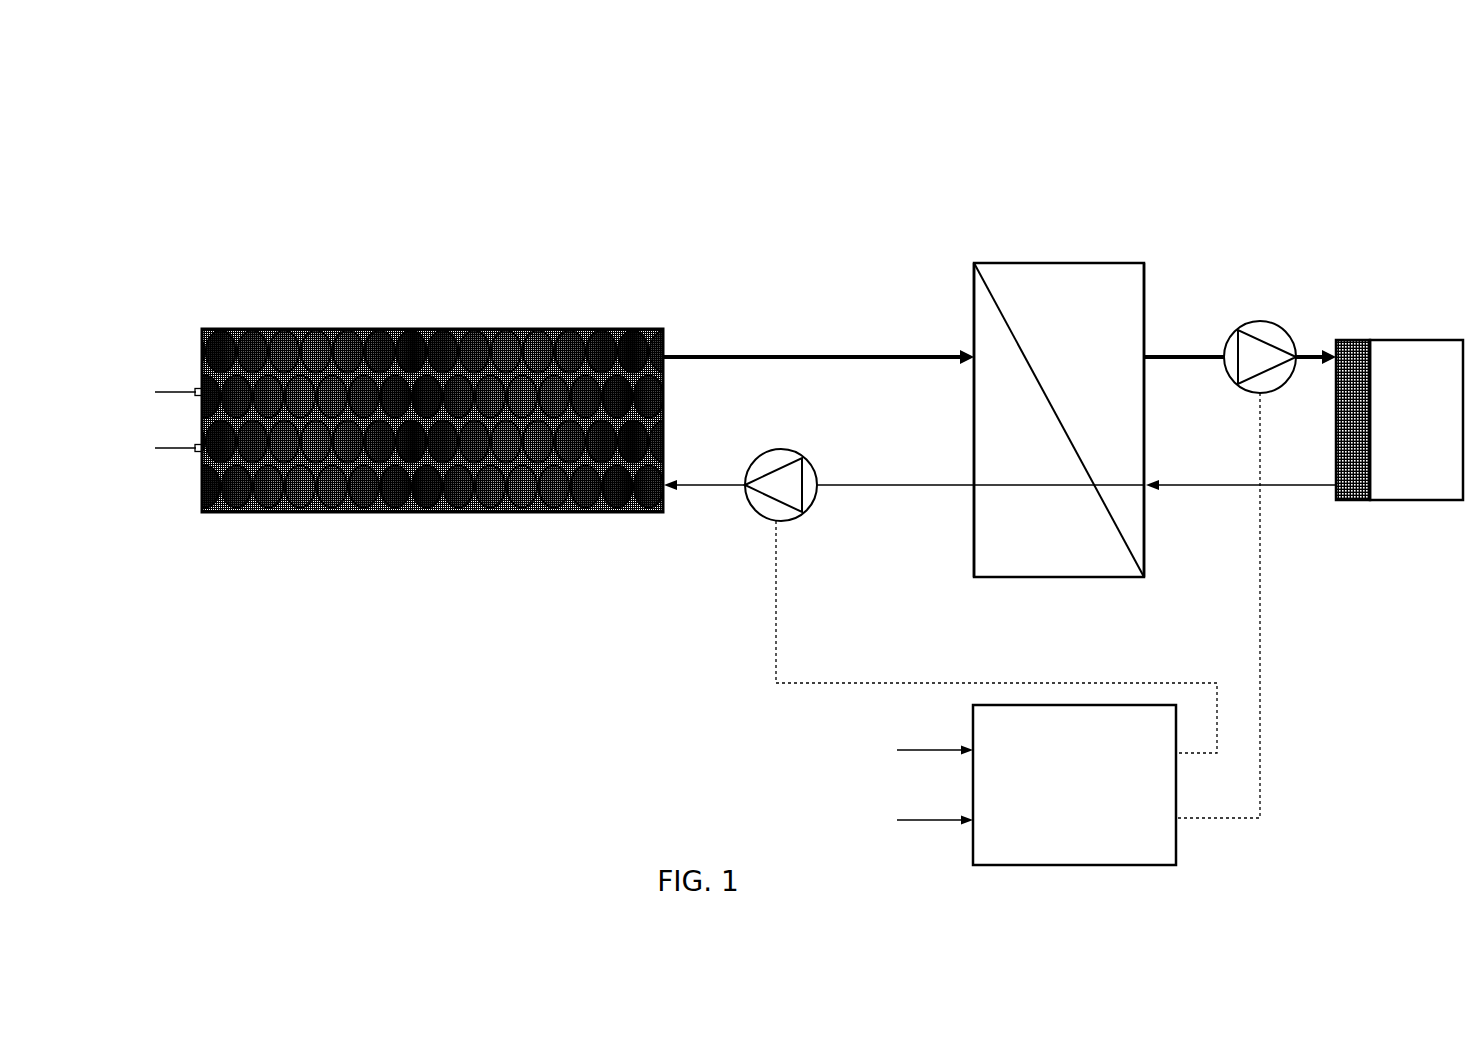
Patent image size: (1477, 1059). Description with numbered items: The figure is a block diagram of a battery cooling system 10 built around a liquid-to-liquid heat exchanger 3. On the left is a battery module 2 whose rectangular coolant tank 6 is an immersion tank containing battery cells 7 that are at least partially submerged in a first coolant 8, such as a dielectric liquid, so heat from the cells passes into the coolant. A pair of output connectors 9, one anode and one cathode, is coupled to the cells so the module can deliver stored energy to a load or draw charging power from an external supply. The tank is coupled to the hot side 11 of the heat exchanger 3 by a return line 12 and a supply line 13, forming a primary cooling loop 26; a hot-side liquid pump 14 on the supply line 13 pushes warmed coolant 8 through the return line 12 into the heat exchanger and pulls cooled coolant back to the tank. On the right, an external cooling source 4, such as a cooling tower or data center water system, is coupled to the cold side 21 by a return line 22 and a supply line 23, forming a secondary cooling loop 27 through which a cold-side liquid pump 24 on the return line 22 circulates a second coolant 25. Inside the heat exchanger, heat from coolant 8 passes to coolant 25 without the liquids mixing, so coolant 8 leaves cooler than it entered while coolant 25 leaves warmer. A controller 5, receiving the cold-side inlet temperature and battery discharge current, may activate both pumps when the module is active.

The battery cooling system 10 is at (396, 131).
The battery module 2 is at (408, 473).
The coolant tank 6 is at (408, 375).
The battery cells 7 is at (426, 398).
The coolant 8 is at (220, 512).
The output connectors 9 is at (180, 489).
The return line 12 is at (708, 355).
The primary cooling loop 26 is at (803, 387).
The supply line 13 is at (693, 493).
The hot-side liquid pump 14 is at (757, 516).
The heat exchanger 3 is at (1028, 262).
The hot side 11 is at (944, 420).
The cold side 21 is at (1178, 420).
The cold-side liquid pump 24 is at (1251, 320).
The return line 22 is at (1310, 350).
The supply line 23 is at (1245, 487).
The secondary cooling loop 27 is at (1282, 471).
The external cooling source 4 is at (1416, 420).
The coolant 25 is at (1360, 495).
The controller 5 is at (1018, 629).